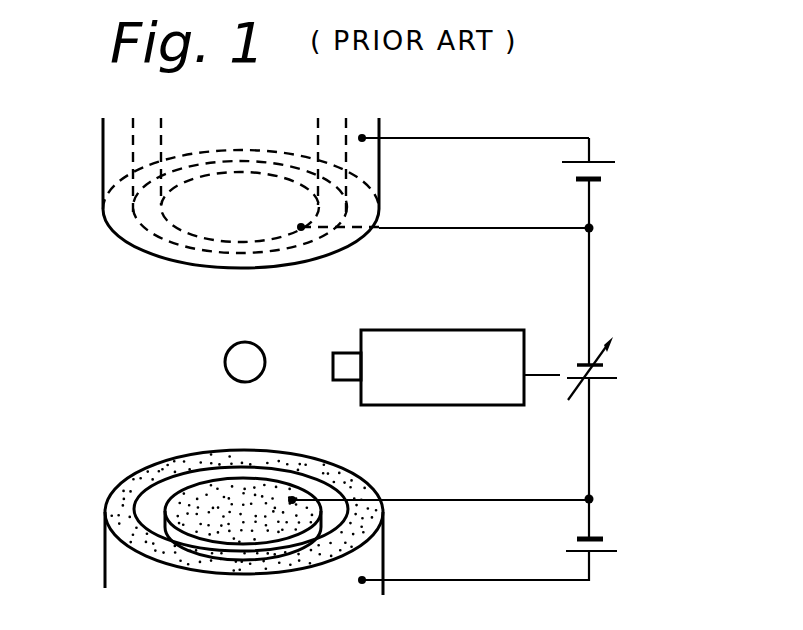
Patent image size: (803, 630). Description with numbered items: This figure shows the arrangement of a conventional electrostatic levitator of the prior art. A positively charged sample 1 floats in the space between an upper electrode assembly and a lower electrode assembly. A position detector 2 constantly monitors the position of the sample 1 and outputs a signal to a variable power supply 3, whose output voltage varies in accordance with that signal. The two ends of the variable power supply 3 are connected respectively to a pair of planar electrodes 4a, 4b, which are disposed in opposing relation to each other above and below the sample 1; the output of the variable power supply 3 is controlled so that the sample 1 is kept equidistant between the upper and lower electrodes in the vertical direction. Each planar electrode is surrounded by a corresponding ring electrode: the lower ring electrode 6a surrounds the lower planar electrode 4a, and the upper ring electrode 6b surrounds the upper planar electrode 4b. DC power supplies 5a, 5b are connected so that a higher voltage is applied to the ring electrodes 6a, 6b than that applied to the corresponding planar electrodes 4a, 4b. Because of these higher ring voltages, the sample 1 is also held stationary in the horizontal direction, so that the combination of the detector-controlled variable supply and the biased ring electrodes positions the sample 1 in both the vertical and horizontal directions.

The charged sample 1 is at (263, 345).
The position detector 2 is at (457, 331).
The variable power supply 3 is at (621, 377).
The planar electrode 4a is at (206, 492).
The planar electrode 4b is at (190, 220).
The DC power supply 5a is at (612, 541).
The DC power supply 5b is at (606, 172).
The ring electrode 6a is at (110, 495).
The ring electrode 6b is at (105, 226).